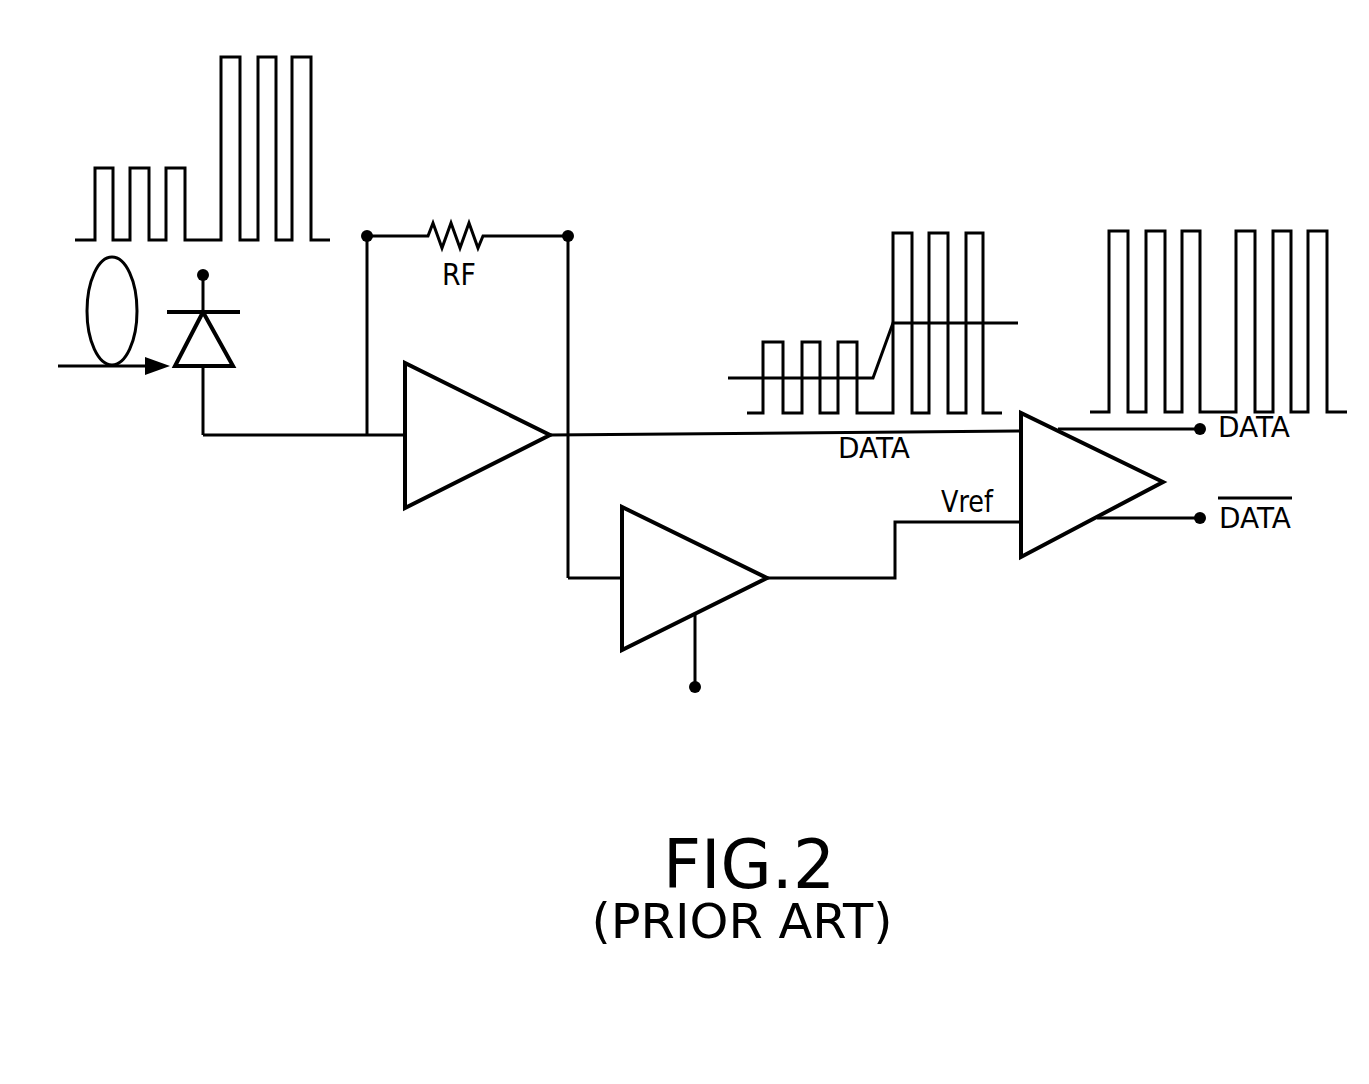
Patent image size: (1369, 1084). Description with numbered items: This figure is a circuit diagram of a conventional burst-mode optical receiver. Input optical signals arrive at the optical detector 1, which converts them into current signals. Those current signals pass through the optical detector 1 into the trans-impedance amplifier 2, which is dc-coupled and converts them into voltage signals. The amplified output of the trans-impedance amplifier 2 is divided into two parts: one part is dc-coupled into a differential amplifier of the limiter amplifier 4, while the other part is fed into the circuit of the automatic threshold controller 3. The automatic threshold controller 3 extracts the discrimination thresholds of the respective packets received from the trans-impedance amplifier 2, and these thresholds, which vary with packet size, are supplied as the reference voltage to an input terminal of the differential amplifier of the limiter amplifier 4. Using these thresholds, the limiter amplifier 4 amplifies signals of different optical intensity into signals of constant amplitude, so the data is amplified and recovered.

The optical detector 1 is at (185, 383).
The trans-impedance amplifier 2 is at (470, 478).
The automatic threshold controller 3 is at (720, 603).
The limiter amplifier 4 is at (1067, 532).